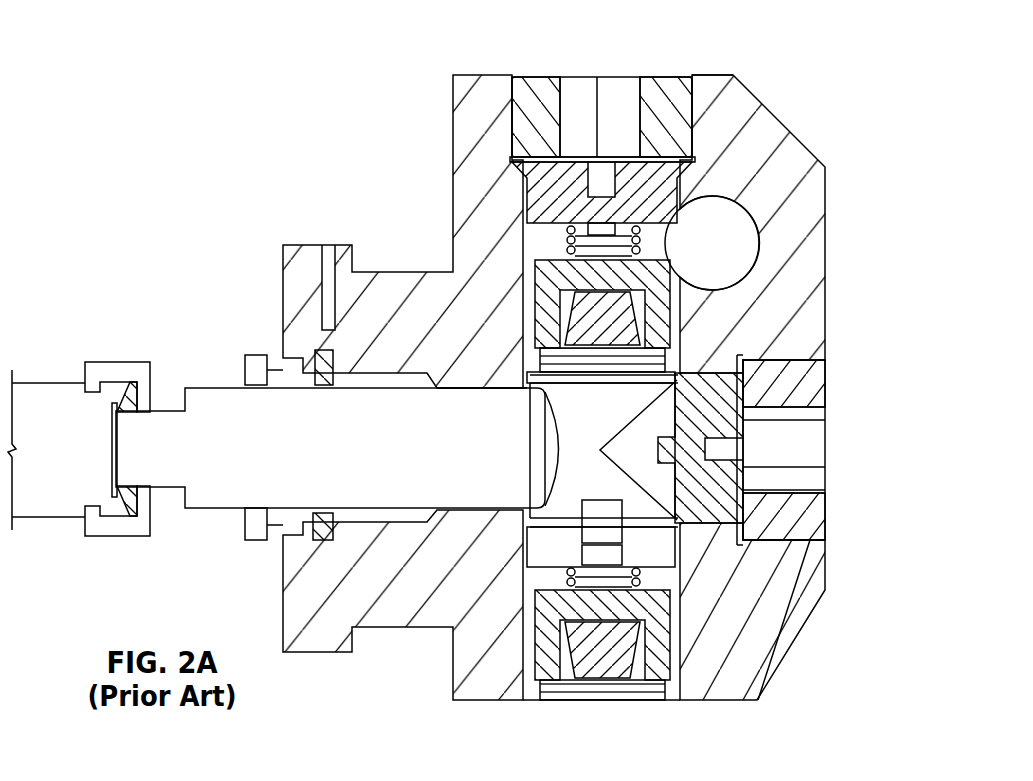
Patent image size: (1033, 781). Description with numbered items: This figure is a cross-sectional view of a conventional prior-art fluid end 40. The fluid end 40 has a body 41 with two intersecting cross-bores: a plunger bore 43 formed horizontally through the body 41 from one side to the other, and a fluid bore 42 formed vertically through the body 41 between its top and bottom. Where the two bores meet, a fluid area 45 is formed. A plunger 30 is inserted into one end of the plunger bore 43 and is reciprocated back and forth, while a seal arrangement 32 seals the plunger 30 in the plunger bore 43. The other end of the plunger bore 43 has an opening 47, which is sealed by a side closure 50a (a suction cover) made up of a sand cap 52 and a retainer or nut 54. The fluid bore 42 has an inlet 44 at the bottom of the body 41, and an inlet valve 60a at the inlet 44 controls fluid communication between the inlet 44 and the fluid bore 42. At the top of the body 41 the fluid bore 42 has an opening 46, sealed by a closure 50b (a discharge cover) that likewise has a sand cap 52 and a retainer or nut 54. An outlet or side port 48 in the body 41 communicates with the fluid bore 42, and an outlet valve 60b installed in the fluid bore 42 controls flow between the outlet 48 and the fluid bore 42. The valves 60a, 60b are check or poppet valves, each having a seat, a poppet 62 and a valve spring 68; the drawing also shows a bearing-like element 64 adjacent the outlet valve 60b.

The plunger 30 is at (205, 510).
The seal arrangement 32 is at (270, 556).
The fluid end 40 is at (453, 152).
The body 41 is at (395, 620).
The fluid bore 42 is at (673, 540).
The plunger bore 43 is at (474, 388).
The inlet 44 is at (652, 692).
The fluid area 45 is at (574, 419).
The opening 46 is at (700, 75).
The opening 47 is at (805, 526).
The outlet 48 is at (728, 241).
The side closure 50a is at (850, 448).
The closure 50b is at (660, 68).
The sand cap 52 is at (622, 158).
The retainer 54 is at (536, 85).
The inlet valve 60a is at (688, 660).
The outlet valve 60b is at (711, 315).
The poppet 62 is at (655, 345).
The bearing outer race 64 is at (662, 277).
The valve spring 68 is at (565, 240).